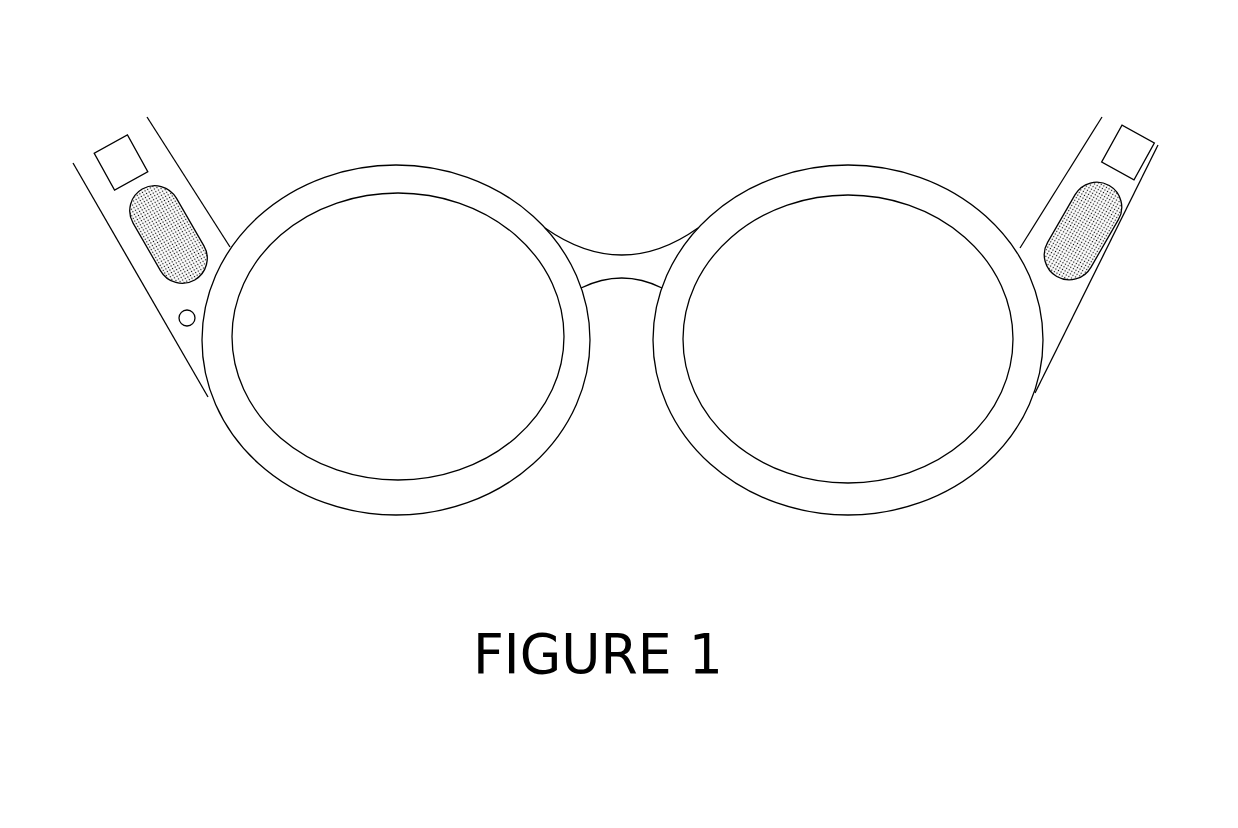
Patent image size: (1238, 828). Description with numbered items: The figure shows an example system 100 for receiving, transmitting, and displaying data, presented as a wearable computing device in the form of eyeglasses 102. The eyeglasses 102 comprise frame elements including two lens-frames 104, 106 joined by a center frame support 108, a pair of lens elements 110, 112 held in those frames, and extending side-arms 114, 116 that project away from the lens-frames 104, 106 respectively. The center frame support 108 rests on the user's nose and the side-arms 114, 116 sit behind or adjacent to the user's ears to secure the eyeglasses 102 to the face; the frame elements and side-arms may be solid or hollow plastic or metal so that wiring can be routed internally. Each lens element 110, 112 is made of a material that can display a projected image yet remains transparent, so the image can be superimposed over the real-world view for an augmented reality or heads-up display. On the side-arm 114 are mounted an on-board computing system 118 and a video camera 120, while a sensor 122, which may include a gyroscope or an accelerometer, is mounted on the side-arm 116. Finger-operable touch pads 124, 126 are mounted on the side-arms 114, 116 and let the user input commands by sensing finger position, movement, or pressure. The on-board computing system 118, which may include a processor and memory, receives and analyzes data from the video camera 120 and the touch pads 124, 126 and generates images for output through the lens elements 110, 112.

The system 100 is at (618, 297).
The eyeglasses 102 is at (618, 297).
The lens-frame 104 is at (396, 309).
The lens-frame 106 is at (848, 318).
The center frame support 108 is at (617, 255).
The lens element 110 is at (308, 425).
The lens element 112 is at (772, 448).
The extending side-arm 114 is at (156, 271).
The extending side-arm 116 is at (1086, 255).
The on-board computing system 118 is at (128, 163).
The video camera 120 is at (178, 323).
The sensor 122 is at (1130, 155).
The finger-operable touch pad 124 is at (167, 232).
The finger-operable touch pad 126 is at (1082, 240).